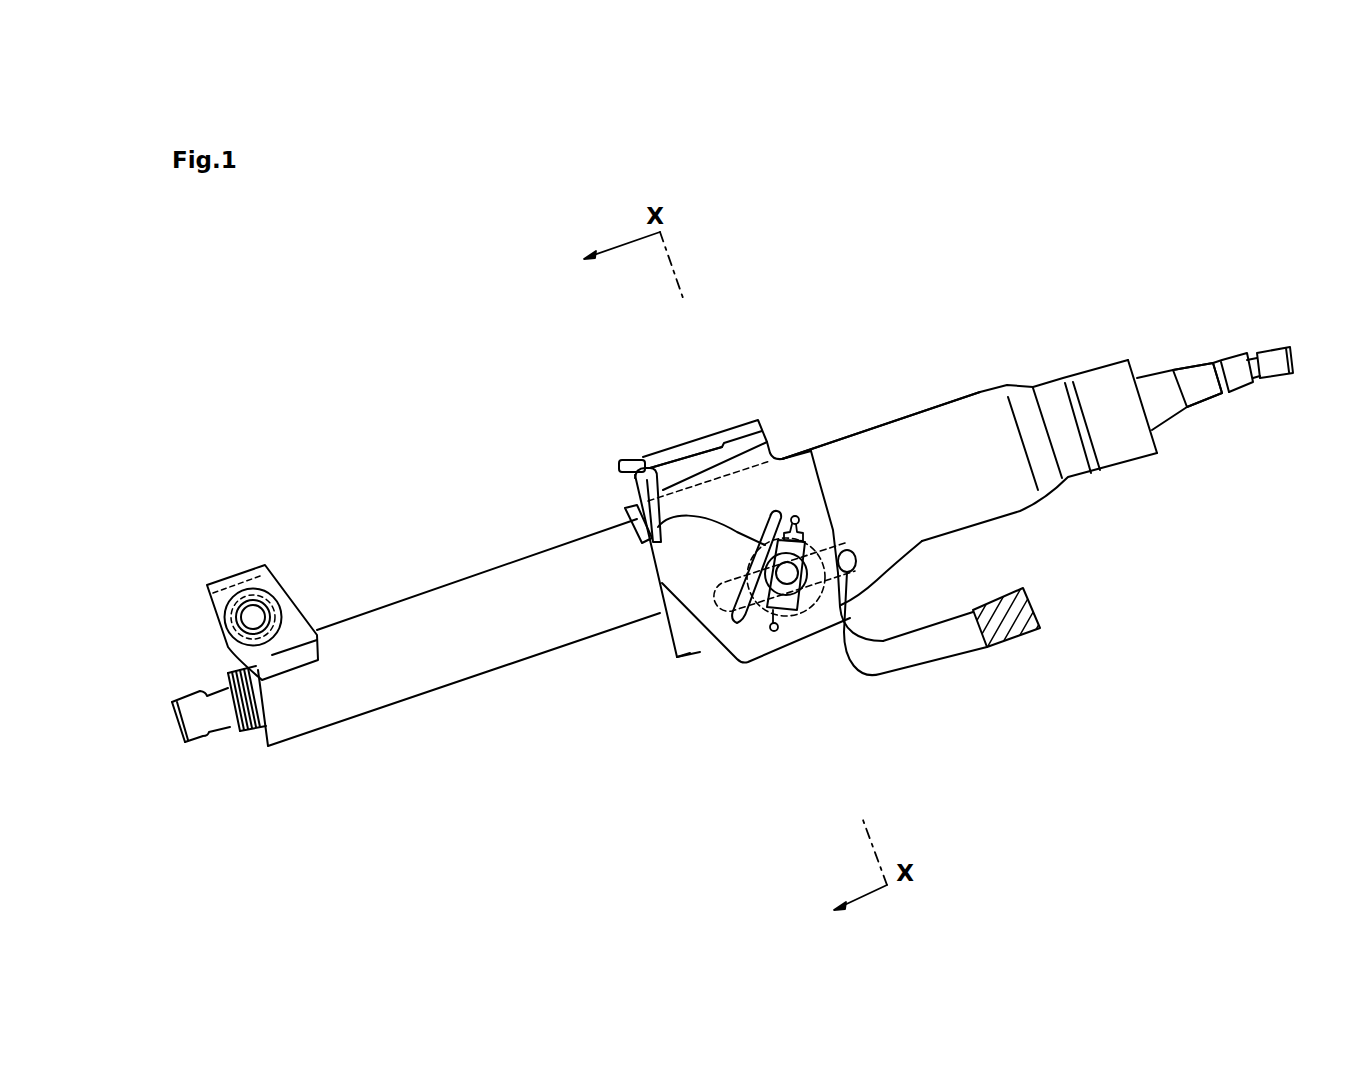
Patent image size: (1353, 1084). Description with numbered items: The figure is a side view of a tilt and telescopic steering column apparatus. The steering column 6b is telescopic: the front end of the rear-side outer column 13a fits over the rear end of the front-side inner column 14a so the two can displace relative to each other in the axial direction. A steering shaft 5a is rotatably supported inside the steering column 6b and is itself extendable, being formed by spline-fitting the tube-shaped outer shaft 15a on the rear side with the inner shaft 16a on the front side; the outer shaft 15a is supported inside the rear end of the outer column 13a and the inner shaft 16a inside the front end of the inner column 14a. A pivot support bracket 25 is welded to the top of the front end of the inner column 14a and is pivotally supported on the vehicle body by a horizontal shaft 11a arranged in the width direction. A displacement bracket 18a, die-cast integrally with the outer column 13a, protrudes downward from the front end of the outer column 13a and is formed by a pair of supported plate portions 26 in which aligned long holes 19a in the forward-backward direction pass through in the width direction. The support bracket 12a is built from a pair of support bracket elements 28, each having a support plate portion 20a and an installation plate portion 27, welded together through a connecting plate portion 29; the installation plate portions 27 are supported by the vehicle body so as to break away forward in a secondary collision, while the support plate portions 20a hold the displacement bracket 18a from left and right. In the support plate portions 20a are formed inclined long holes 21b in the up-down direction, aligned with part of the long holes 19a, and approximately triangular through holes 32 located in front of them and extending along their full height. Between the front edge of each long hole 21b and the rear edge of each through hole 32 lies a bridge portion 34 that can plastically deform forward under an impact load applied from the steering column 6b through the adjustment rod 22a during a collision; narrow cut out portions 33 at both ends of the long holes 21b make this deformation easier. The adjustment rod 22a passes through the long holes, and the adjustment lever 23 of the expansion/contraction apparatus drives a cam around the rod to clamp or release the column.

The steering shaft 5a is at (1160, 378).
The steering column 6b is at (933, 398).
The horizontal shaft 11a is at (250, 601).
The support bracket 12a is at (774, 442).
The outer column 13a is at (978, 418).
The inner column 14a is at (458, 598).
The outer shaft 15a is at (1197, 400).
The inner shaft 16a is at (230, 733).
The displacement bracket 18a is at (686, 654).
The long holes in the forward-backward direction 19a is at (819, 478).
The support plate portions 20a is at (672, 547).
The long holes in the up-down direction 21b is at (806, 606).
The adjustment rod 22a is at (841, 608).
The adjustment lever 23 is at (937, 645).
The pivot support bracket 25 is at (293, 625).
The supported plate portions 26 is at (672, 636).
The installation plate portions 27 is at (725, 445).
The support bracket elements 28 is at (665, 495).
The connecting plate portion 29 is at (692, 449).
The through holes 32 is at (758, 630).
The cut out portions 33 is at (796, 516).
The bridge portion 34 is at (618, 528).